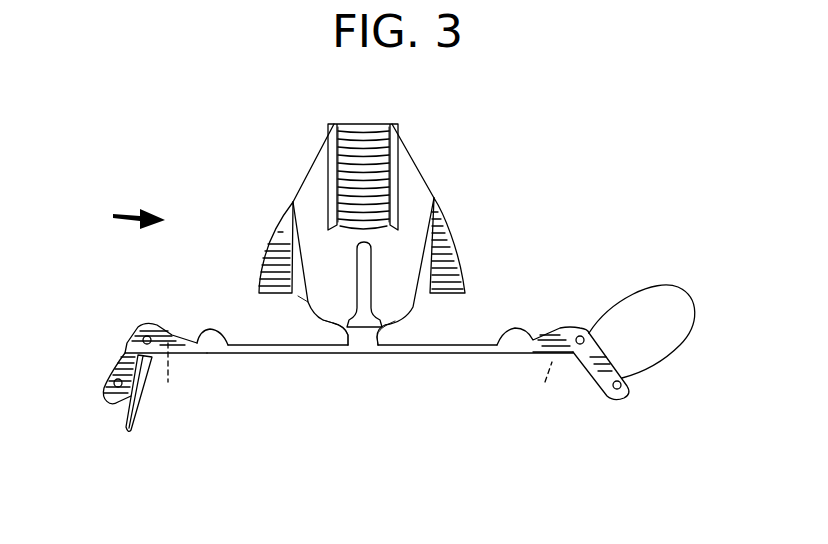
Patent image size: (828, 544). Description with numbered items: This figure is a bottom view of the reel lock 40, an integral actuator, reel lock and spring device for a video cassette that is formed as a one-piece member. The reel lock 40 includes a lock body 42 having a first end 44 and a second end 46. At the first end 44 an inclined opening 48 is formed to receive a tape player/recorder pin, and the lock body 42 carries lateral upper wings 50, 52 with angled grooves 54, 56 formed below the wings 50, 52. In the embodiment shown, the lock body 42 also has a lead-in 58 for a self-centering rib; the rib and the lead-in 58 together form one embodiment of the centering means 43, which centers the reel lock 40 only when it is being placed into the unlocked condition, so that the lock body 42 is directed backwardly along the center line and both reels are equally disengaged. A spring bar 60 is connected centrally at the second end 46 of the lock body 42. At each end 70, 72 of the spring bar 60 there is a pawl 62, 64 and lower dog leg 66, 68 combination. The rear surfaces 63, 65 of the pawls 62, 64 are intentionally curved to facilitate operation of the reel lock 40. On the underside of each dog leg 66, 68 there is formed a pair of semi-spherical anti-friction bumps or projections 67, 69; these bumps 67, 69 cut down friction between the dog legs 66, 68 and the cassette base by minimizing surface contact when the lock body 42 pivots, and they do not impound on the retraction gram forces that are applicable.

The reel lock 40 is at (101, 228).
The lock body 42 is at (408, 188).
The centering means 43 is at (356, 345).
The first end 44 is at (361, 124).
The second end 46 is at (327, 320).
The inclined opening 48 is at (355, 143).
The lateral upper wing 50 is at (270, 252).
The lateral upper wing 52 is at (456, 250).
The angled groove 54 is at (303, 298).
The angled groove 56 is at (422, 302).
The lead-in 58 is at (360, 268).
The spring bar 60 is at (397, 353).
The pawl 62 is at (205, 353).
The rear surface 63 is at (173, 377).
The pawl 64 is at (531, 340).
The rear surface 65 is at (546, 389).
The lower dog leg 66 is at (127, 350).
The anti-friction bump 67 is at (135, 409).
The lower dog leg 68 is at (607, 358).
The anti-friction bump 69 is at (698, 278).
The end of spring bar 70 is at (105, 400).
The end of spring bar 72 is at (625, 394).